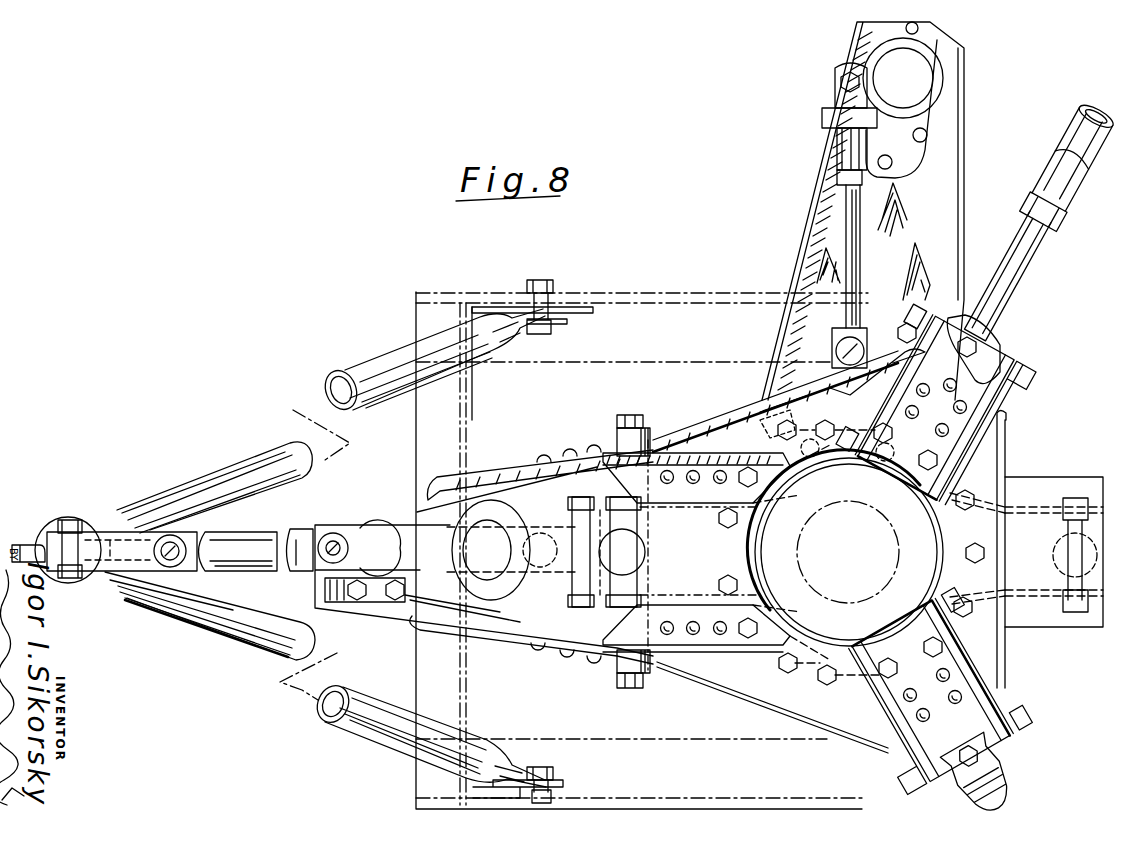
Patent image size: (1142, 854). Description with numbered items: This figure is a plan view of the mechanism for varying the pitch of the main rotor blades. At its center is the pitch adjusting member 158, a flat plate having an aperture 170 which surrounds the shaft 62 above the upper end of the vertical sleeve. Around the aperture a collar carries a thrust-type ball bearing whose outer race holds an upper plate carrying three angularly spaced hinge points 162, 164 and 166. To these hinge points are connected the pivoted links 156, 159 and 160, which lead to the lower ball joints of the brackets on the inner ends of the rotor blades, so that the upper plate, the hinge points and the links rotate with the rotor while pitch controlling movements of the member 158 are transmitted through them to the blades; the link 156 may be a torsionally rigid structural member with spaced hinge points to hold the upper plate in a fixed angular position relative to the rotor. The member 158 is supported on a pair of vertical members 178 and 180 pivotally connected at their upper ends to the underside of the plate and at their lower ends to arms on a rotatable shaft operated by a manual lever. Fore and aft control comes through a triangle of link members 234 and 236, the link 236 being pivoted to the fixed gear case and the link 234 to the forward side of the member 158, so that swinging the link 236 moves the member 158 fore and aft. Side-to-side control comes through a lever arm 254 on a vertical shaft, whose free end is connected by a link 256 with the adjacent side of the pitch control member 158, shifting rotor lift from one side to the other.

The shaft 62 is at (880, 510).
The pivoted link 156 is at (432, 500).
The pitch adjusting member 158 is at (1006, 450).
The pivoted link 159 is at (1038, 262).
The pivoted link 160 is at (1000, 790).
The hinge point 162 is at (628, 415).
The hinge point 164 is at (990, 416).
The hinge point 166 is at (1000, 696).
The aperture 170 is at (930, 576).
The vertical member 178 is at (640, 582).
The vertical member 180 is at (1103, 562).
The link member 234 is at (302, 530).
The link member 236 is at (255, 610).
The lever arm 254 is at (850, 60).
The link 256 is at (843, 222).